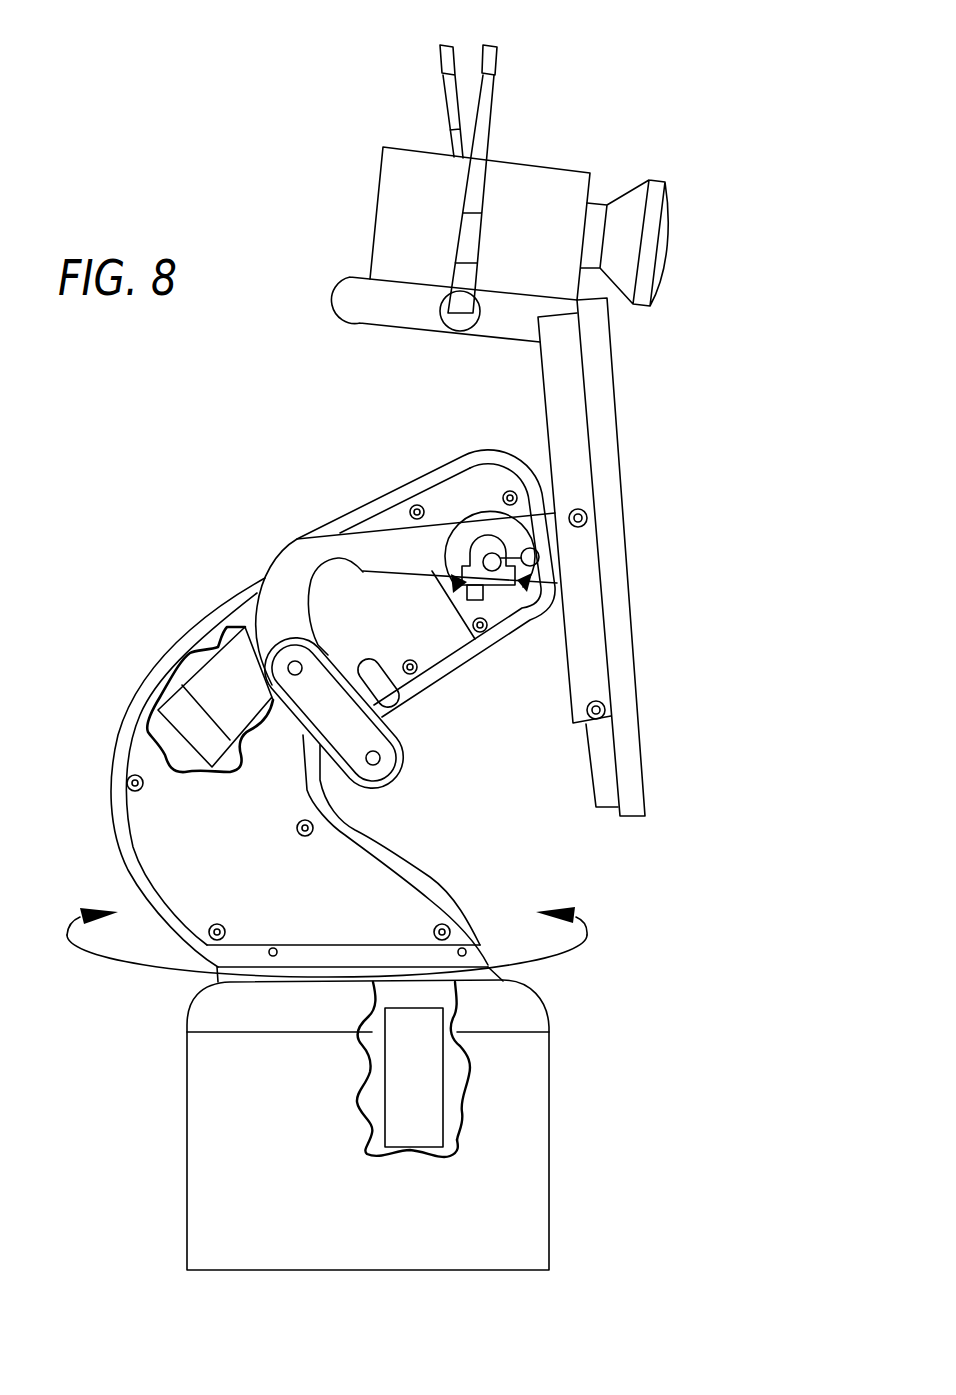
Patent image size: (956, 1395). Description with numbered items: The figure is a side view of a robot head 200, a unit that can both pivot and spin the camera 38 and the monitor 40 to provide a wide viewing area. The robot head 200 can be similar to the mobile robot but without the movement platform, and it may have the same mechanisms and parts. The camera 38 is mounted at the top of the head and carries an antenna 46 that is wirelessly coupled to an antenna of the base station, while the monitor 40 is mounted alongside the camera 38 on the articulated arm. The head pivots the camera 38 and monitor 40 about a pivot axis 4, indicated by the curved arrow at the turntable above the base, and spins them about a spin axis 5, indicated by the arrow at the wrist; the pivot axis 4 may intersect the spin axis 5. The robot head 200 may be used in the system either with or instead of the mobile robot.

The robot head 200 is at (148, 517).
The camera 38 is at (553, 190).
The antenna 46 is at (487, 115).
The monitor 40 is at (636, 660).
The spin axis 5 is at (482, 555).
The pivot axis 4 is at (331, 942).